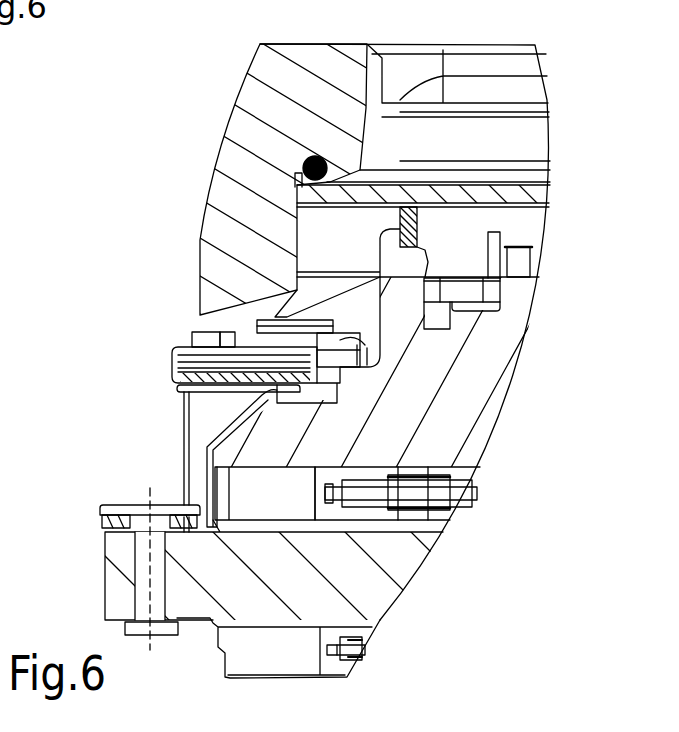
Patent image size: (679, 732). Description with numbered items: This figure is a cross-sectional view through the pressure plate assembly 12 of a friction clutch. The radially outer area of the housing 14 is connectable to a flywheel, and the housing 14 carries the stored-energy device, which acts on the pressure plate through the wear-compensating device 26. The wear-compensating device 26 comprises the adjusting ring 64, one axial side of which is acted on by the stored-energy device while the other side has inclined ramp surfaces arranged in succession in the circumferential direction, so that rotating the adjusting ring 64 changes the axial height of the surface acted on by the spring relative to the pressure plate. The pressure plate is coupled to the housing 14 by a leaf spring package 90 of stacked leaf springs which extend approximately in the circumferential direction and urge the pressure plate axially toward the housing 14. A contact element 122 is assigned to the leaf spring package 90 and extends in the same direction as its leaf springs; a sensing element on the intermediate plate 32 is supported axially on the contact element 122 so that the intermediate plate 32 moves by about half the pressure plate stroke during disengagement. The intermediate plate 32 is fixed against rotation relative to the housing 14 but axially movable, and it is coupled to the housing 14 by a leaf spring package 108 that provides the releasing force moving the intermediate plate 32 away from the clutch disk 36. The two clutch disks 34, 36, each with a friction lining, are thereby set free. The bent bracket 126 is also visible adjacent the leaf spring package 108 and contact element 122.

The pressure plate assembly 12 is at (188, 106).
The housing 14 is at (403, 43).
The wear-compensating device 26 is at (316, 247).
The adjusting ring 64 is at (533, 228).
The leaf spring package 90 is at (190, 342).
The contact element 122 is at (177, 389).
The bracket 126 is at (197, 428).
The leaf spring package 108 is at (100, 520).
The clutch disk 34 is at (473, 491).
The intermediate plate 32 is at (403, 563).
The clutch disk 36 is at (362, 648).